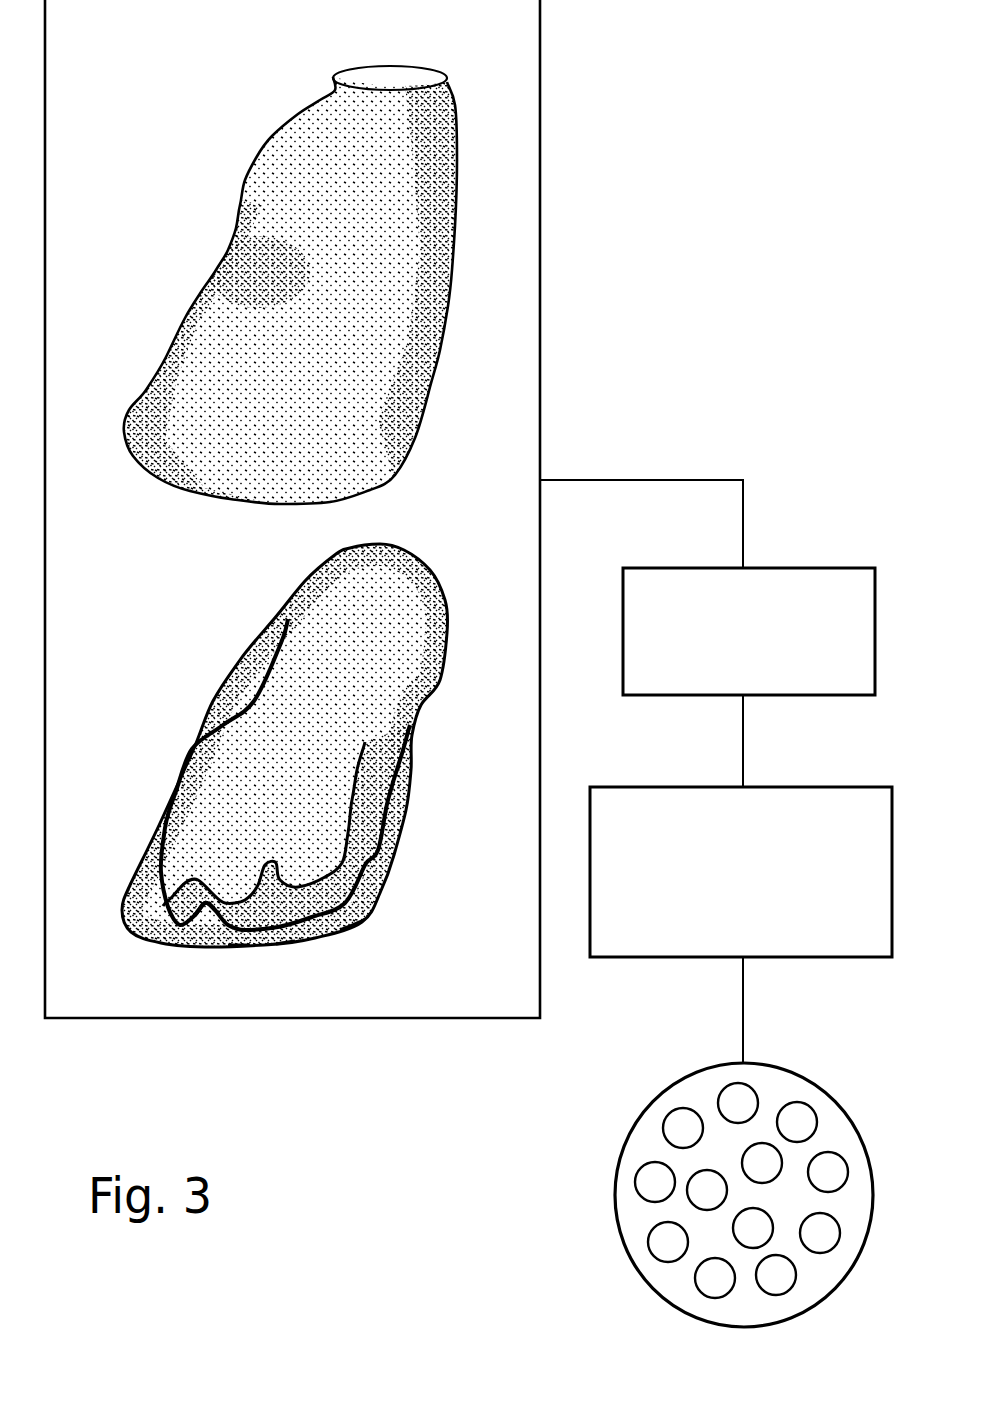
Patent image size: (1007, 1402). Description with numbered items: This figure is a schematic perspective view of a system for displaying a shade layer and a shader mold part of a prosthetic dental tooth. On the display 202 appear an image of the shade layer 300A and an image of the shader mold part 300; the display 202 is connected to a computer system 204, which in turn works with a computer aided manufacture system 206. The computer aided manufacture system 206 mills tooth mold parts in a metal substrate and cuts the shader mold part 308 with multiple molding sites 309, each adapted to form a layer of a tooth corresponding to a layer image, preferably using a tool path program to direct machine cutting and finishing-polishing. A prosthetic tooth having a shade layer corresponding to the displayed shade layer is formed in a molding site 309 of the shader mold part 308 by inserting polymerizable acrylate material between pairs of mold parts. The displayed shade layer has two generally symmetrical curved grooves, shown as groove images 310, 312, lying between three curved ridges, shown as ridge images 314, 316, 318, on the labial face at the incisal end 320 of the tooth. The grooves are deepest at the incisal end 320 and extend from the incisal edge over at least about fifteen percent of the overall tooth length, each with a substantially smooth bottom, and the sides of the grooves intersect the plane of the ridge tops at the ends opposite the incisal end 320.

The display 202 is at (540, 410).
The computer system 204 is at (812, 568).
The computer aided manufacture system 206 is at (826, 787).
The shade layer image 300A is at (455, 272).
The shader mold part image 300 is at (281, 760).
The shader mold part 308 is at (685, 1199).
The molding sites 309 is at (688, 1247).
The groove image 310 is at (208, 922).
The groove image 312 is at (285, 942).
The ridge image 314 is at (161, 856).
The ridge image 316 is at (238, 947).
The ridge image 318 is at (388, 865).
The incisal end 320 is at (348, 925).